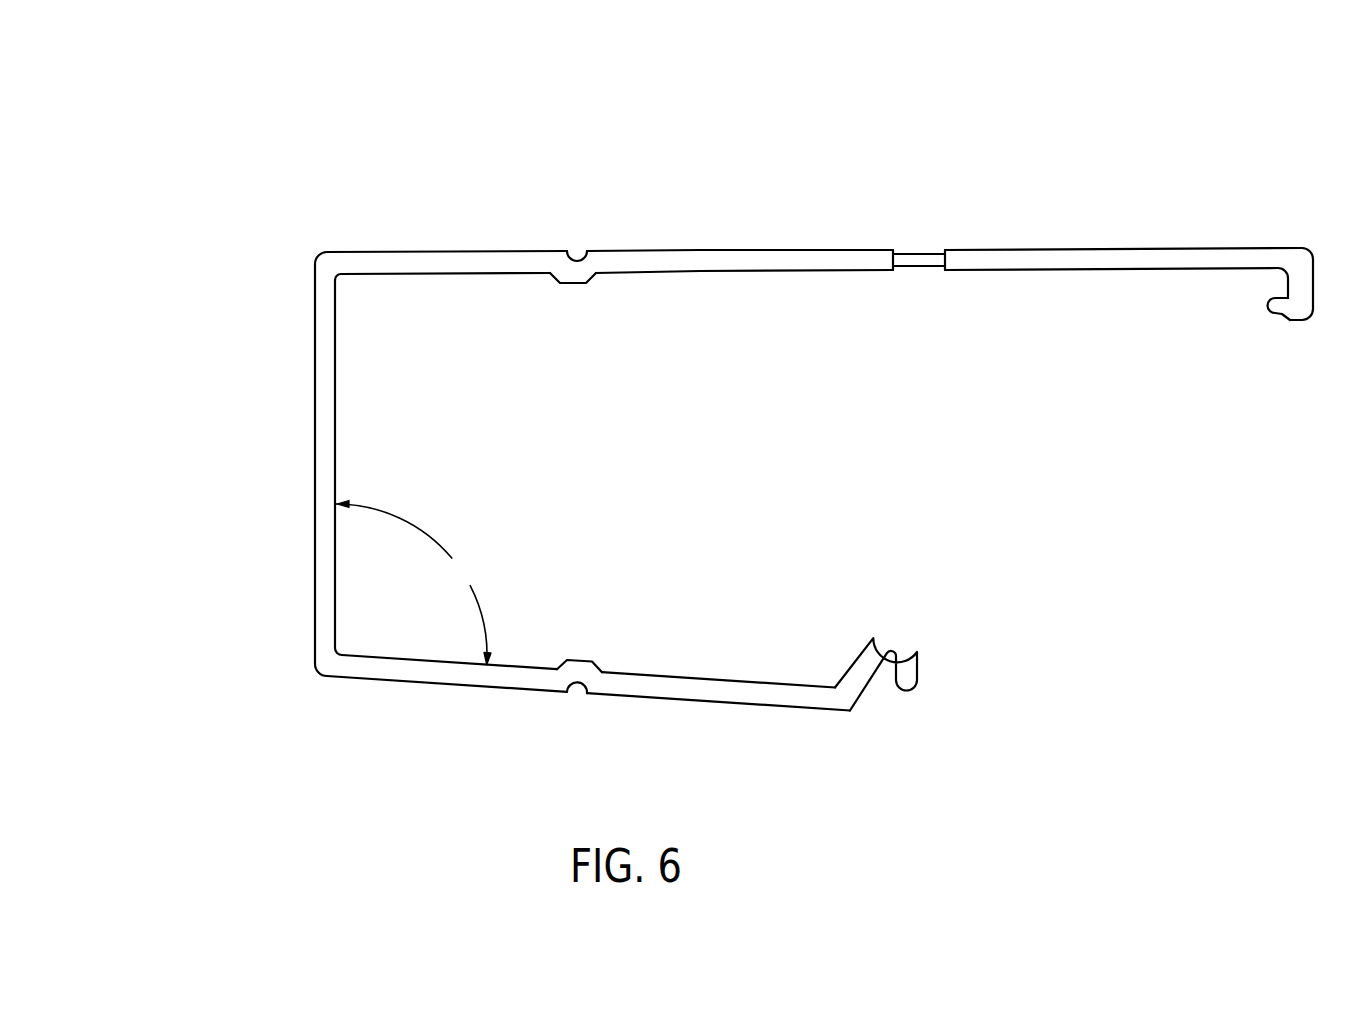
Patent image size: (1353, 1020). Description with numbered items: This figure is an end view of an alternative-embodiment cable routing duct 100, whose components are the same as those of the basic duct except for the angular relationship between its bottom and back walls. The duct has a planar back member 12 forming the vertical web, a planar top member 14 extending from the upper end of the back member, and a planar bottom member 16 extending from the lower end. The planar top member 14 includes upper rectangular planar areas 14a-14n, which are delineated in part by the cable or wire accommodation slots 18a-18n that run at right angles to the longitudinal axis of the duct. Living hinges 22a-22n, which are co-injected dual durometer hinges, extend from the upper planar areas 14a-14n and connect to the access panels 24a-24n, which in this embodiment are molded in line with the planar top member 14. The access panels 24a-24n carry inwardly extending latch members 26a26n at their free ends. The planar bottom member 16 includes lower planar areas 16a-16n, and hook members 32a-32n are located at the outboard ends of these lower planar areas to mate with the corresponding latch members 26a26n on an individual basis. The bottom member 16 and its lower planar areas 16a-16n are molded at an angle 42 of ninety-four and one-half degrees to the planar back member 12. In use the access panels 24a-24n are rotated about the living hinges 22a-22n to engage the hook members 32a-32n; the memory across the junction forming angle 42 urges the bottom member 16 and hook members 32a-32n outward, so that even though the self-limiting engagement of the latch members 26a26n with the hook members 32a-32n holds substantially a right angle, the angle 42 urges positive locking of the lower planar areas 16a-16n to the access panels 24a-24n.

The cable routing duct 100 is at (205, 145).
The planar back member 12 is at (323, 303).
The planar top member 14 is at (380, 263).
The planar bottom member 16 is at (397, 670).
The angle 42 is at (433, 533).
The upper rectangular planar areas 14a-14n is at (623, 262).
The cable or wire accommodation slots 18a-18n is at (773, 263).
The living hinges 22a-22n is at (920, 252).
The access panels 24a-24n is at (1270, 257).
The latch members 26a26n is at (1288, 312).
The hook members 32a-32n is at (872, 643).
The lower rectangular planar areas 16a-16n is at (727, 688).